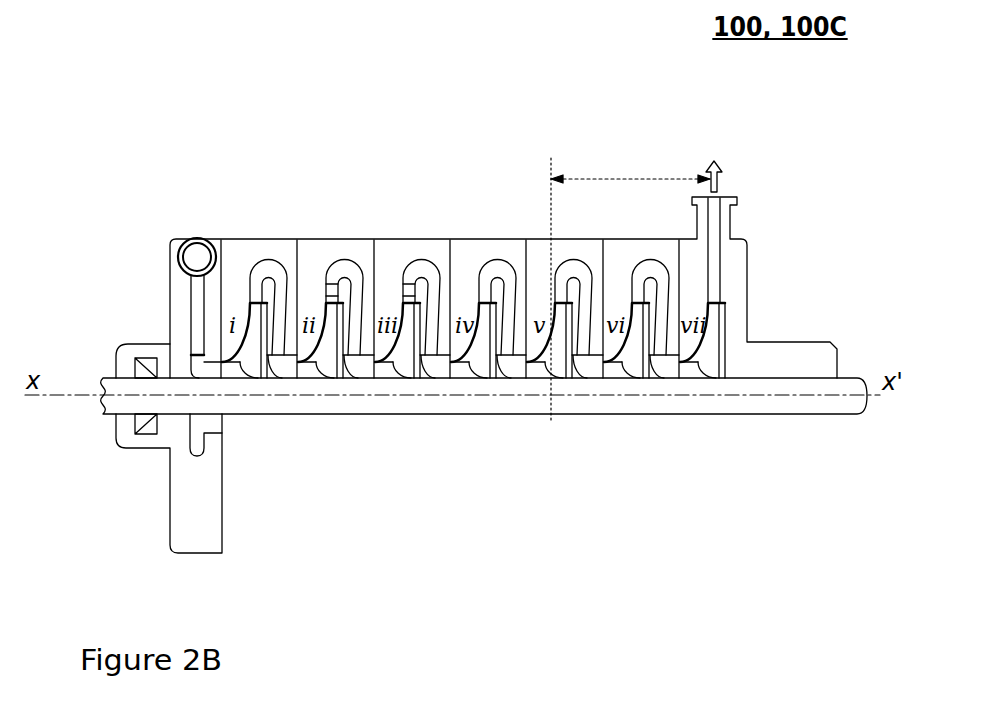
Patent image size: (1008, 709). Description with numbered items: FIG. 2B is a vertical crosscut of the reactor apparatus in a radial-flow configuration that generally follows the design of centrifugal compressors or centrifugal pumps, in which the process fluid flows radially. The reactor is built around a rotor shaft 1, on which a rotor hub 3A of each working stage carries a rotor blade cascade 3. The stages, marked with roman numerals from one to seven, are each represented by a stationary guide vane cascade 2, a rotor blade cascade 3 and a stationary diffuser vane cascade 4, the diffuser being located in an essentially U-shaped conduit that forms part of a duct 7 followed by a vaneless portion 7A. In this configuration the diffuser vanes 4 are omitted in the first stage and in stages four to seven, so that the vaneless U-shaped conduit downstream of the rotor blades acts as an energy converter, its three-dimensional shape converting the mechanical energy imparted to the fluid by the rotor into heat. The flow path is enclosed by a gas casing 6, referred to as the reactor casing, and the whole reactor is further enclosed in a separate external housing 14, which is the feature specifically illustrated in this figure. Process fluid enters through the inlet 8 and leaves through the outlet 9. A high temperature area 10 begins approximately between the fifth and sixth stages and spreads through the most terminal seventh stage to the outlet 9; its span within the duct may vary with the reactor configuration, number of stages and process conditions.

The rotor shaft 1 is at (110, 402).
The stationary guide vane cascade 2 is at (437, 367).
The rotor blade cascade 3 is at (468, 365).
The rotor hub 3A is at (260, 372).
The stationary diffuser vane cascade 4 is at (412, 288).
The gas casing 6 is at (256, 268).
The duct 7 is at (437, 313).
The vaneless portion of the duct 7A is at (497, 268).
The inlet 8 is at (182, 259).
The outlet 9 is at (731, 198).
The high temperature area 10 is at (630, 282).
The external housing of the reactor 14 is at (320, 239).